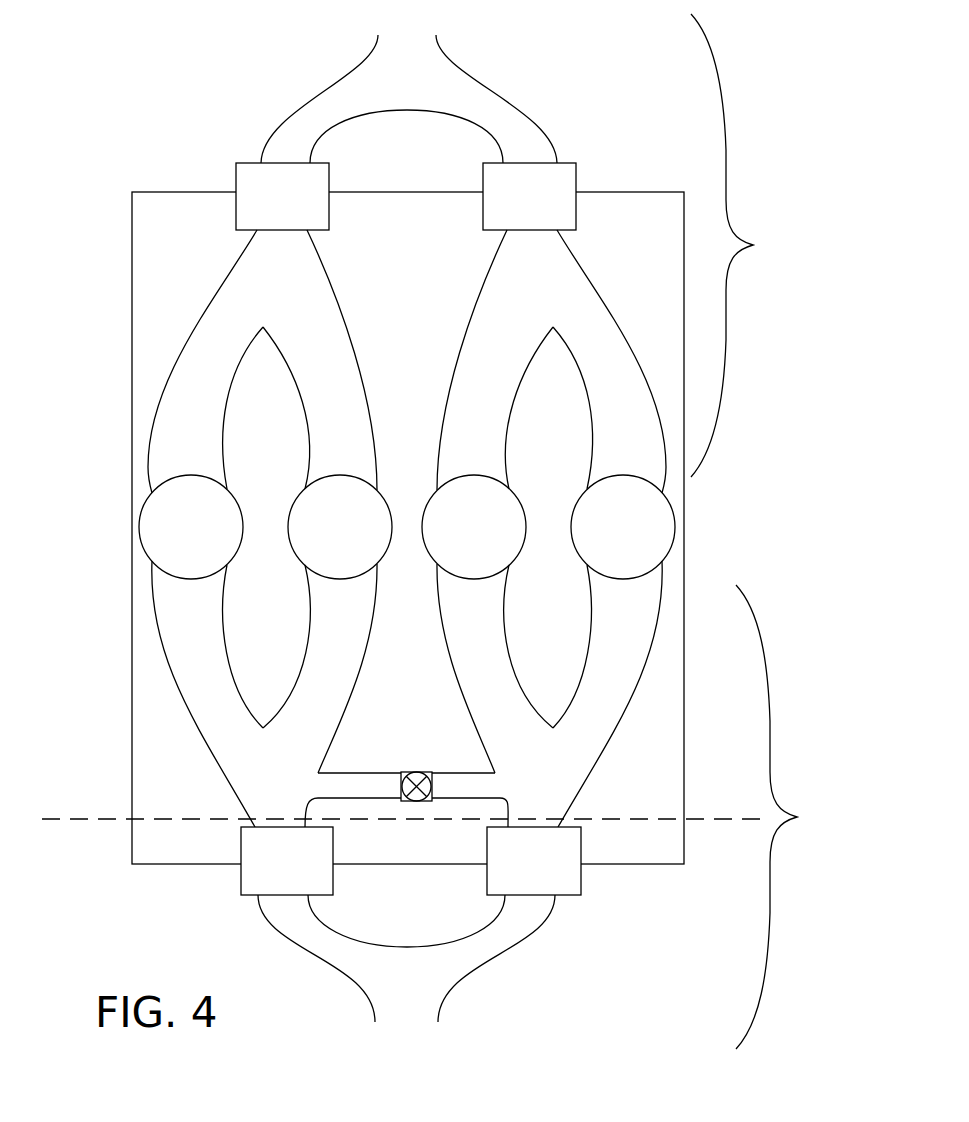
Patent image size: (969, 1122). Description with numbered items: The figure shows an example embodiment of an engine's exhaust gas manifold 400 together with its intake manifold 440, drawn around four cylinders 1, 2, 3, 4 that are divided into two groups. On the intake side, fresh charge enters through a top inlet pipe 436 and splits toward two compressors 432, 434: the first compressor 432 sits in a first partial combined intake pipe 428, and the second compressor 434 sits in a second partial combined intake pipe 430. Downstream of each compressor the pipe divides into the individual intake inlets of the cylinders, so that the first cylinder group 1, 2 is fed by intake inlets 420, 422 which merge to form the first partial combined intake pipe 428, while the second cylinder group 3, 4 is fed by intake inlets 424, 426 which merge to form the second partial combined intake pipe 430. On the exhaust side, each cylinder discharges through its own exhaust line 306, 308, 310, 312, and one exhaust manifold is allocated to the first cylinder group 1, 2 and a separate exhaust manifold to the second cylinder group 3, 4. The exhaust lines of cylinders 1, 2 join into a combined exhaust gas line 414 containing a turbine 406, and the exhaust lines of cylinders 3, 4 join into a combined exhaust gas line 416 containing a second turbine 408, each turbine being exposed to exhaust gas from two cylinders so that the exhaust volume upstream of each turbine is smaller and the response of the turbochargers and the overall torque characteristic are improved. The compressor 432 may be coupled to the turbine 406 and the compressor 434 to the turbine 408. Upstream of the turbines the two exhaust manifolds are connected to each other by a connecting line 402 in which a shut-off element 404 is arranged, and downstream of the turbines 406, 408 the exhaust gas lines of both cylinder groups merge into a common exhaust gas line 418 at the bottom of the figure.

The exhaust gas manifold 400 is at (797, 817).
The intake manifold 440 is at (33, 791).
The inlet manifold conduit 436 is at (391, 90).
The compressor 432 is at (266, 203).
The compressor 434 is at (514, 203).
The first partial combined intake pipe 428 is at (257, 277).
The second partial combined intake pipe 430 is at (513, 277).
The intake inlet 420 is at (176, 466).
The intake inlet 422 is at (332, 458).
The intake inlet 424 is at (460, 465).
The intake inlet 426 is at (616, 456).
The cylinder 1 is at (185, 541).
The cylinder 2 is at (334, 541).
The cylinder 3 is at (468, 541).
The cylinder 4 is at (617, 541).
The first pump outlet channel 306 is at (167, 628).
The second pump outlet channel 308 is at (324, 621).
The third pump outlet channel 310 is at (460, 623).
The fourth pump outlet channel 312 is at (610, 615).
The combined exhaust gas line 414 is at (246, 776).
The combined exhaust gas line 416 is at (523, 776).
The connecting line 402 is at (336, 796).
The shut-off element 404 is at (416, 772).
The turbine 406 is at (270, 876).
The turbine 408 is at (519, 876).
The common exhaust gas line 418 is at (396, 1001).